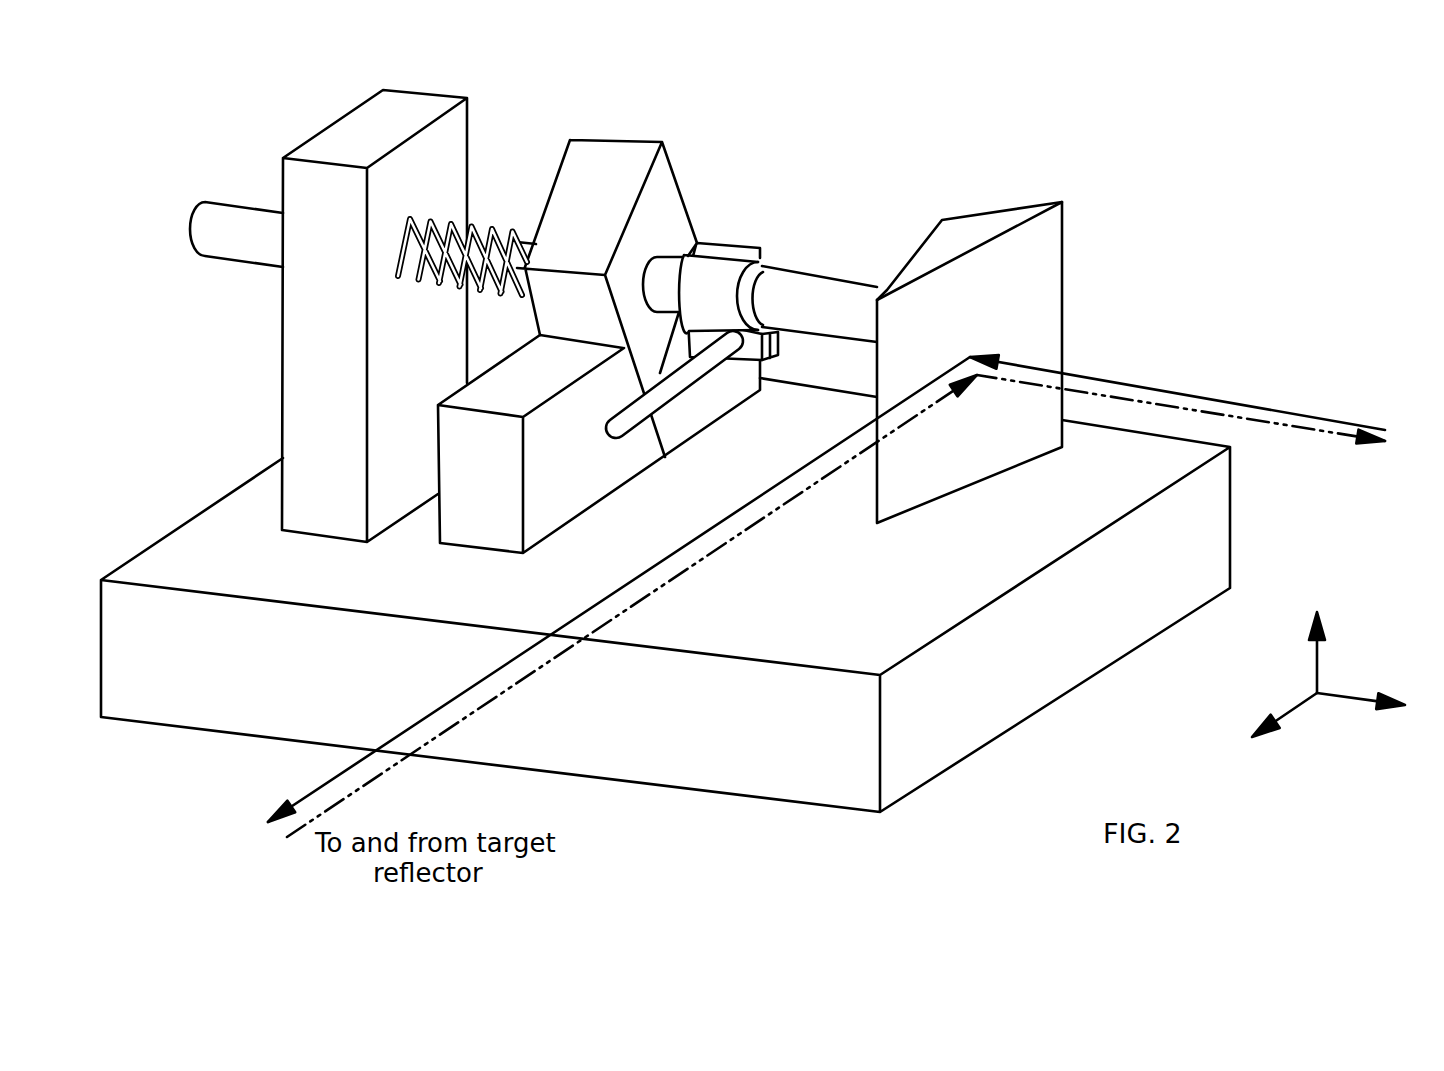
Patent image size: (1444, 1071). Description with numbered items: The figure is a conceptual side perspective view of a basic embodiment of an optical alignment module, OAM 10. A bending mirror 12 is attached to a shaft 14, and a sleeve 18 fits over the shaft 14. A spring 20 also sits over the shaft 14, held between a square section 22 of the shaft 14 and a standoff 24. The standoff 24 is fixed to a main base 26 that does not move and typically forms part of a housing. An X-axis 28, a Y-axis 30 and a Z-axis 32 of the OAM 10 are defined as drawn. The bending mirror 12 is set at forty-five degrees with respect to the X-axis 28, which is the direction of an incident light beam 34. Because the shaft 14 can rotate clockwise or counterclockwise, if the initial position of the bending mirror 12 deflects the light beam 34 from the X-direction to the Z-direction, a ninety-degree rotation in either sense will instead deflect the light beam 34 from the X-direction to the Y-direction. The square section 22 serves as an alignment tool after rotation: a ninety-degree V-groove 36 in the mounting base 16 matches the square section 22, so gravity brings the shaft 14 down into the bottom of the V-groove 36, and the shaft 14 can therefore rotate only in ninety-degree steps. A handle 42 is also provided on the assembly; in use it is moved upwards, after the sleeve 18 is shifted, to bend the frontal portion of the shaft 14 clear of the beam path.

The optical alignment module 10 is at (766, 463).
The bending mirror 12 is at (1001, 315).
The shaft 14 is at (254, 251).
The mounting base 16 is at (499, 488).
The sleeve 18 is at (729, 298).
The spring 20 is at (470, 232).
The square section 22 is at (606, 213).
The standoff 24 is at (342, 368).
The main base 26 is at (1079, 648).
The X-axis 28 is at (1345, 699).
The Y-axis 30 is at (1302, 704).
The Z-axis 32 is at (1318, 663).
The light beam 34 is at (1167, 391).
The V-groove 36 is at (540, 353).
The handle 42 is at (663, 395).